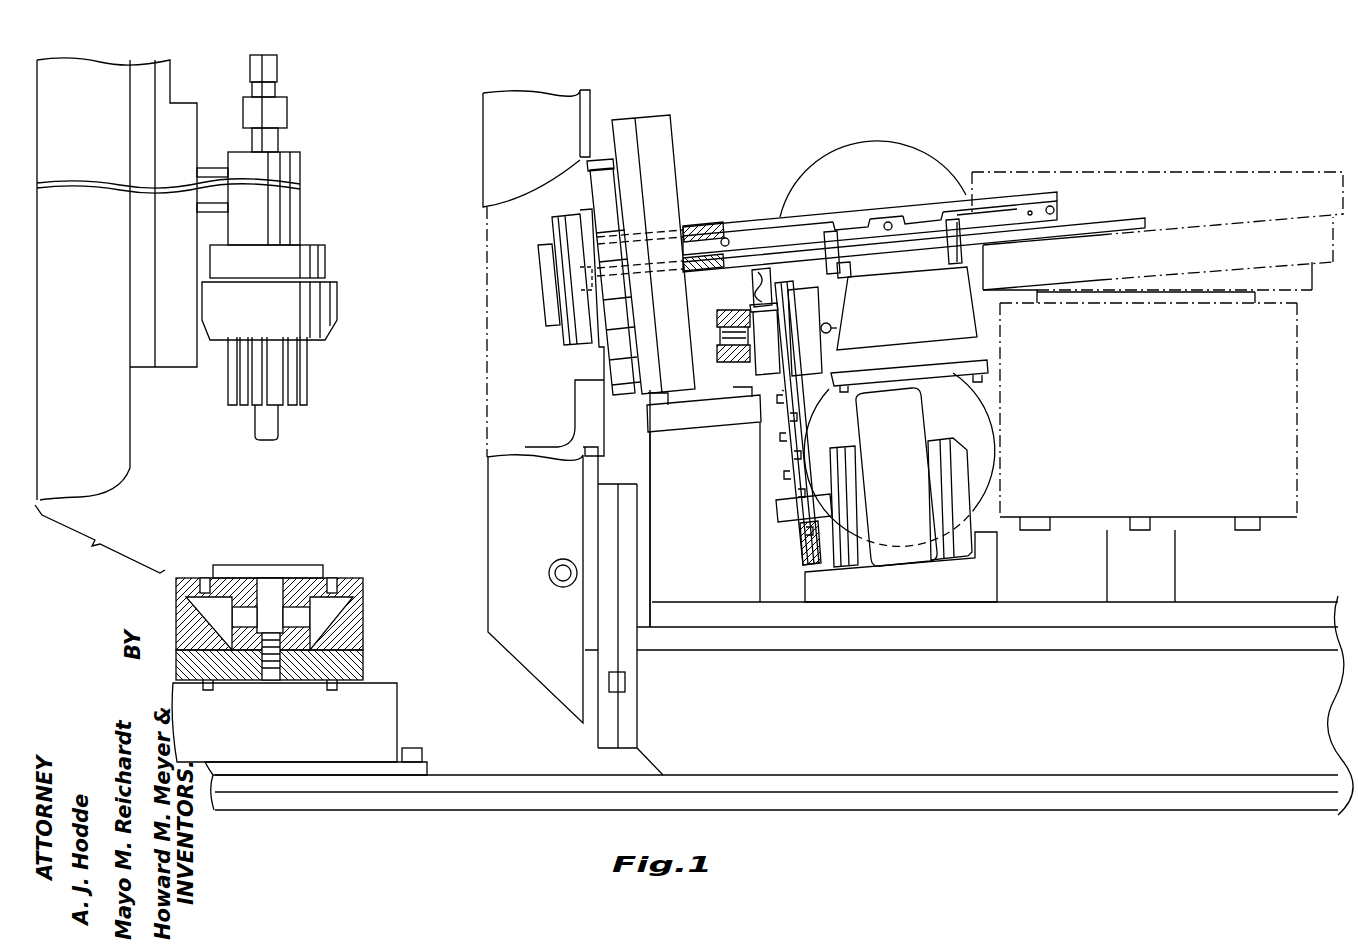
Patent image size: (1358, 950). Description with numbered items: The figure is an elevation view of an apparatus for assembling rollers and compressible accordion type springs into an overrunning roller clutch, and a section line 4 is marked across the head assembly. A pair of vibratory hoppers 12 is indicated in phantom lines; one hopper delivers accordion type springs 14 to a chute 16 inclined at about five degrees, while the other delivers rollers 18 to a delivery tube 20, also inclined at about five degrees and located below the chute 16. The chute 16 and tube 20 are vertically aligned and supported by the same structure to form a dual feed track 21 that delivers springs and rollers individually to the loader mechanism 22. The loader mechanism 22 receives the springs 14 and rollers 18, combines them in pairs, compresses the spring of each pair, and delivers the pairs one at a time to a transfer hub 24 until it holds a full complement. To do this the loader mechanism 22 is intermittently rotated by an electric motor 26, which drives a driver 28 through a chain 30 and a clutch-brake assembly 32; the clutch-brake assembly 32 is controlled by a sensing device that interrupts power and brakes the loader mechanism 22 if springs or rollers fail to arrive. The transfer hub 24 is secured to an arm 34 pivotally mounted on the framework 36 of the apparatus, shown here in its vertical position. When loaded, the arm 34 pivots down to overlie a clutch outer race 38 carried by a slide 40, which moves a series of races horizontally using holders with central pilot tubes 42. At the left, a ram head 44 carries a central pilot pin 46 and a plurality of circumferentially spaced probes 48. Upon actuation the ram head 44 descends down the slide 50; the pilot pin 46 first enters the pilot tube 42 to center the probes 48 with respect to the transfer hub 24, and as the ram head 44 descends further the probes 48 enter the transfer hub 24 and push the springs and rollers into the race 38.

The section line 4- 4 is at (555, 65).
The vibratory hoppers 12 is at (1318, 247).
The accordion type springs 14 is at (695, 232).
The chute 16 is at (1018, 204).
The rollers 18 is at (723, 262).
The delivery tube 20 is at (1093, 228).
The dual feed track 21 is at (893, 208).
The loader mechanism 22 is at (683, 140).
The transfer hub 24 is at (548, 266).
The electric motor 26 is at (925, 553).
The driver 28 is at (733, 360).
The chain 30 is at (808, 442).
The clutch-brake assembly 32 is at (806, 282).
The arm 34 is at (577, 366).
The framework 36 is at (553, 660).
The clutch outer race 38 is at (196, 578).
The slide 40 is at (364, 625).
The central pilot tube 42 is at (268, 655).
The ram head 44 is at (318, 300).
The central pilot pin 46 is at (278, 422).
The probes 48 is at (246, 386).
The slide 50 is at (110, 430).